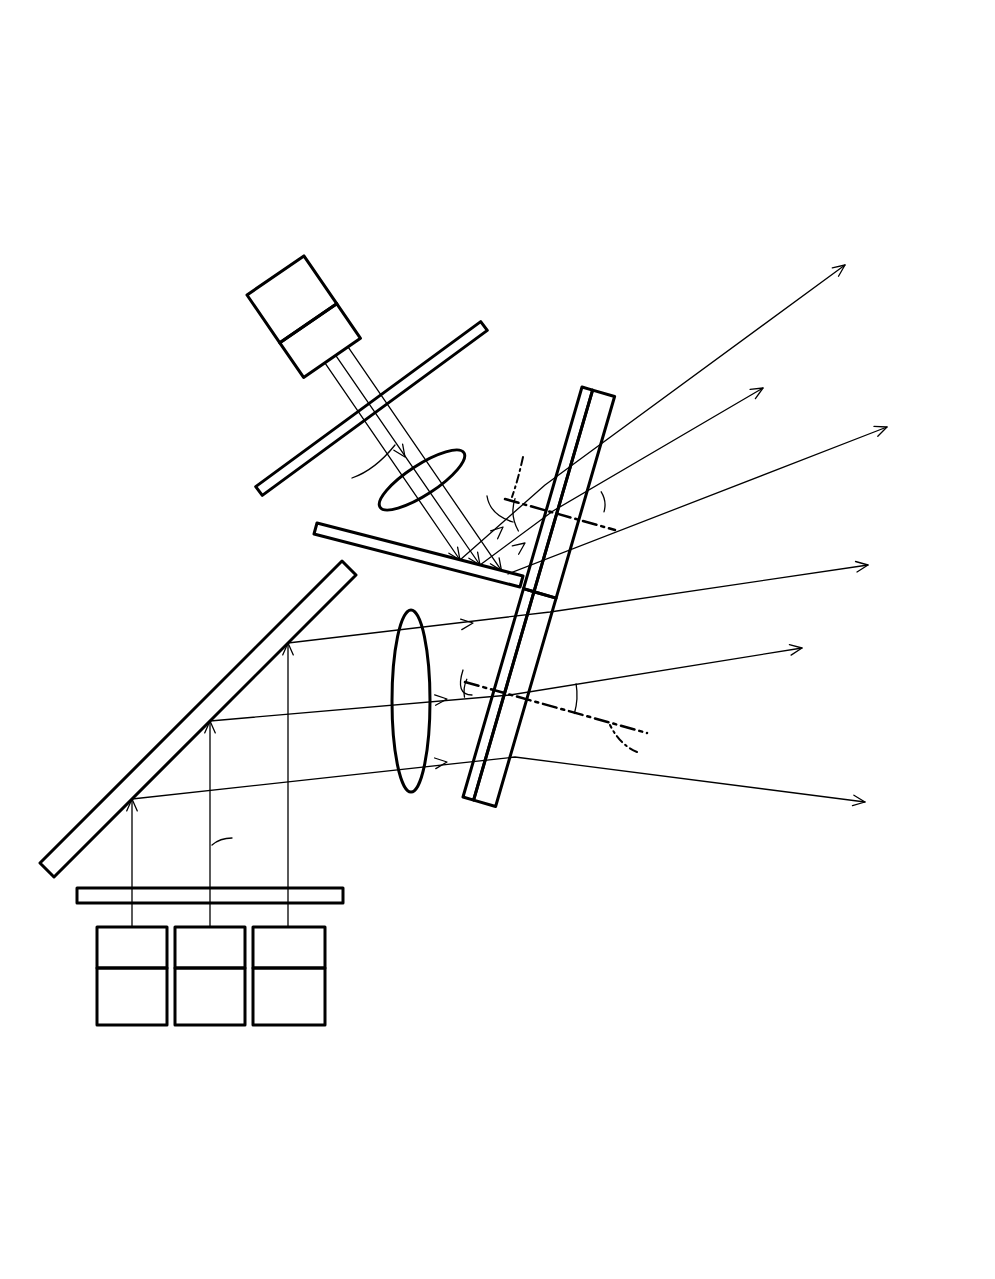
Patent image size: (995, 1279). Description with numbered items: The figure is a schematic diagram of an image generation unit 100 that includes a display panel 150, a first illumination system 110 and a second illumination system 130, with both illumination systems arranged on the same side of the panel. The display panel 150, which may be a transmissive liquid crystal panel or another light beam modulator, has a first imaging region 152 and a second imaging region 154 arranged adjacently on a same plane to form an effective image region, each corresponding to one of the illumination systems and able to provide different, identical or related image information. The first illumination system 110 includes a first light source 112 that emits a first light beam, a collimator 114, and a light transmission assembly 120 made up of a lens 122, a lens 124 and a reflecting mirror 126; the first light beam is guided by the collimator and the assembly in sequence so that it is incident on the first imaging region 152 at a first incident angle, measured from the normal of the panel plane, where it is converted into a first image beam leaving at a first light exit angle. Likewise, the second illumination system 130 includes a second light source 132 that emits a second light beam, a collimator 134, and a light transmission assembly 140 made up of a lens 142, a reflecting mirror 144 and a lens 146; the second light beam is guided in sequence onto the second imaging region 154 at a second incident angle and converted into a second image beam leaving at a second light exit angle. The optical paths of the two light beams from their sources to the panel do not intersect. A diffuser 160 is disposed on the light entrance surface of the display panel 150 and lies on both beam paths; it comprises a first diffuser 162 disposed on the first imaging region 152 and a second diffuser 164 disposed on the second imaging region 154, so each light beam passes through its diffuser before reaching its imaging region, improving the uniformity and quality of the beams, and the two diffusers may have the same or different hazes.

The image generation unit 100 is at (874, 1094).
The first illumination system 110 is at (270, 313).
The first light source 112 is at (298, 292).
The collimator 114 is at (330, 337).
The light transmission assembly 120 is at (293, 293).
The lens 122 is at (482, 328).
The lens 124 is at (447, 457).
The reflecting mirror 126 is at (318, 531).
The second illumination system 130 is at (286, 976).
The second light source 132 is at (113, 1002).
The collimator 134 is at (113, 952).
The light transmission assembly 140 is at (218, 479).
The lens 142 is at (93, 895).
The reflecting mirror 144 is at (243, 674).
The lens 146 is at (405, 780).
The display panel 150 is at (367, 479).
The first imaging region 152 is at (603, 403).
The second imaging region 154 is at (490, 788).
The diffuser 160 is at (338, 503).
The first diffuser 162 is at (585, 400).
The second diffuser 164 is at (477, 785).